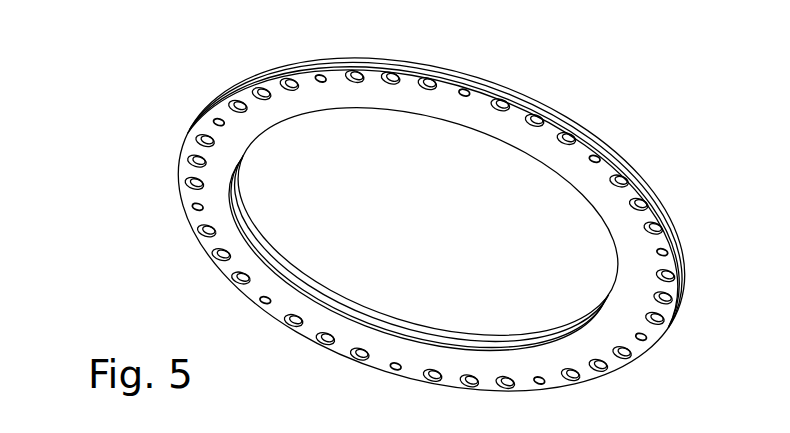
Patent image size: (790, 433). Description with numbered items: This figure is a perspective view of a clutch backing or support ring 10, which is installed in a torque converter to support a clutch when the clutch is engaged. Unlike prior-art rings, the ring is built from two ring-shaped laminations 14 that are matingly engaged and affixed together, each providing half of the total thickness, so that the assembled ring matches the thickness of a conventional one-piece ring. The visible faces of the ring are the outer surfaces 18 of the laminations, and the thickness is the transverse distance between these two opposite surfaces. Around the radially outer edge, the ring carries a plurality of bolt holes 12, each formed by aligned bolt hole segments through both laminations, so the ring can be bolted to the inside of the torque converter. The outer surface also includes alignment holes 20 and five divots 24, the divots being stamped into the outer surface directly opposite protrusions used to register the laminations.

The backing ring 10 is at (212, 60).
The bolt holes 12 is at (391, 72).
The lamination 14 is at (478, 82).
The outer surface 18 is at (215, 192).
The alignment holes 20 is at (599, 159).
The divots 24 is at (666, 252).